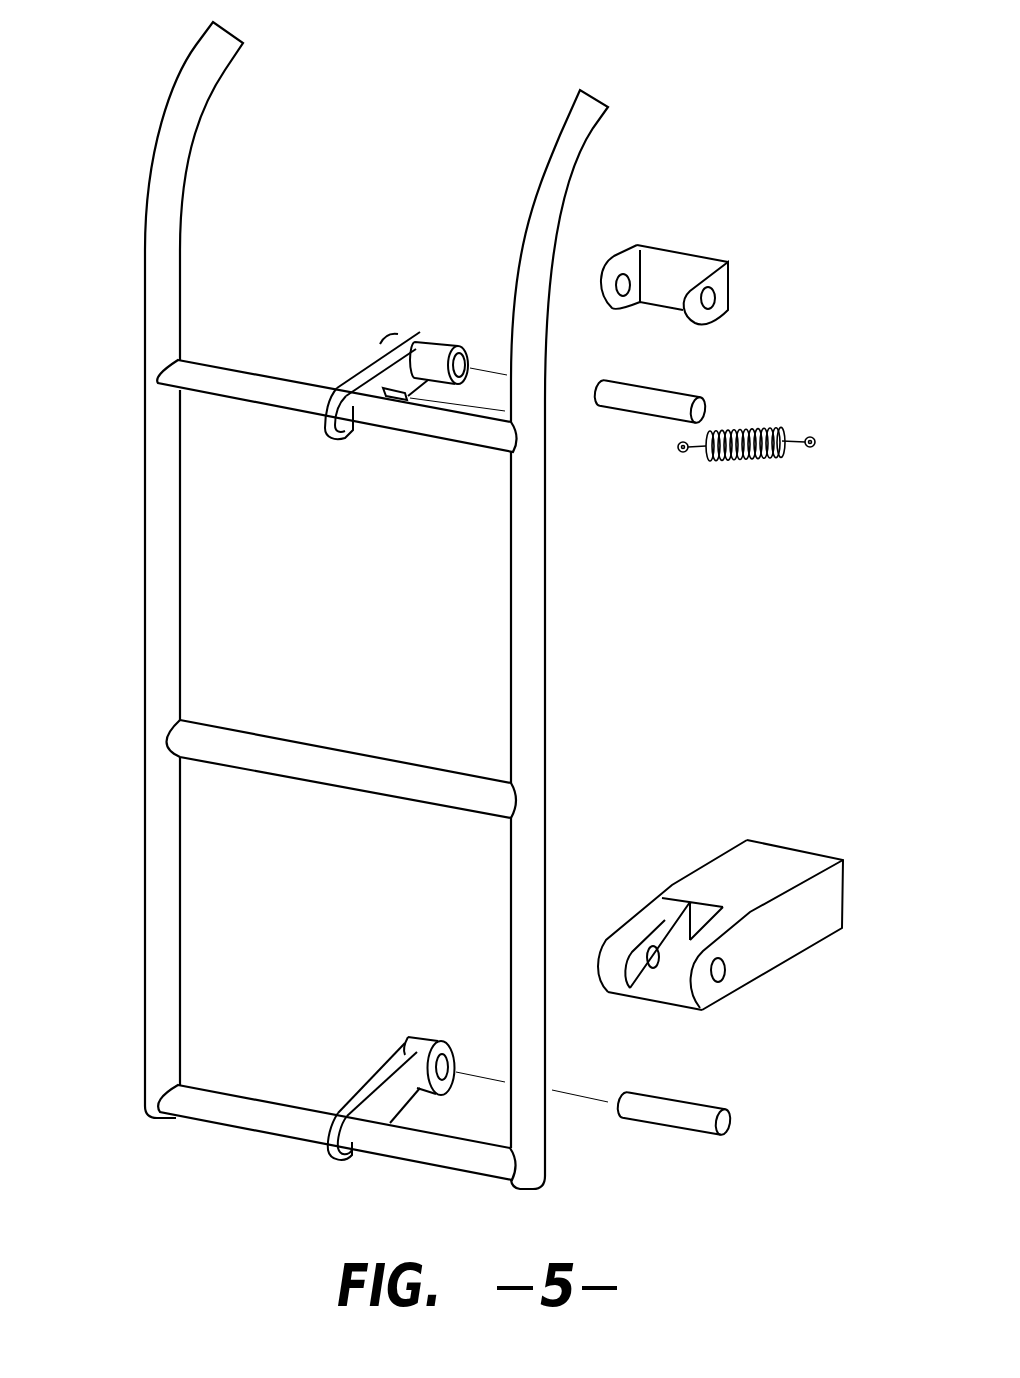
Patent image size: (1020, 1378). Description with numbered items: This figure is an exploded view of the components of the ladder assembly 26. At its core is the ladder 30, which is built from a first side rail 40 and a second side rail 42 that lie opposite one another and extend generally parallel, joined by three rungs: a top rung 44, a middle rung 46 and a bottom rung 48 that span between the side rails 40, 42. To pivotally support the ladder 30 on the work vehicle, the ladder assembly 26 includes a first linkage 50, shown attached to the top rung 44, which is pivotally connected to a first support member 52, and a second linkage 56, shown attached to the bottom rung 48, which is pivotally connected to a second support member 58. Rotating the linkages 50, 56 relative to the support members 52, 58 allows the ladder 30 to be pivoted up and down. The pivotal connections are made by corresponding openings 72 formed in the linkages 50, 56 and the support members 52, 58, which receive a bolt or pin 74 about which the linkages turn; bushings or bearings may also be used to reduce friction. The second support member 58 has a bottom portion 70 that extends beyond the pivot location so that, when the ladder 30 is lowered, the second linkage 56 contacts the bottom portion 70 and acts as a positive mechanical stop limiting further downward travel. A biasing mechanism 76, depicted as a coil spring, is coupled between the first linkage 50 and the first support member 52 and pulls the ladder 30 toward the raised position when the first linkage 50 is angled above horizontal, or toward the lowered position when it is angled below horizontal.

The ladder assembly 26 is at (724, 101).
The ladder 30 is at (122, 435).
The first side rail 40 is at (162, 580).
The second side rail 42 is at (533, 570).
The top rung 44 is at (278, 395).
The middle rung 46 is at (272, 758).
The bottom rung 48 is at (258, 1117).
The first linkage 50 is at (353, 372).
The first support member 52 is at (670, 247).
The second linkage 56 is at (363, 1088).
The second support member 58 is at (770, 857).
The bottom portion 70 is at (640, 1000).
The openings 72 is at (635, 280).
The pin 74 is at (662, 390).
The biasing mechanism 76 is at (753, 427).